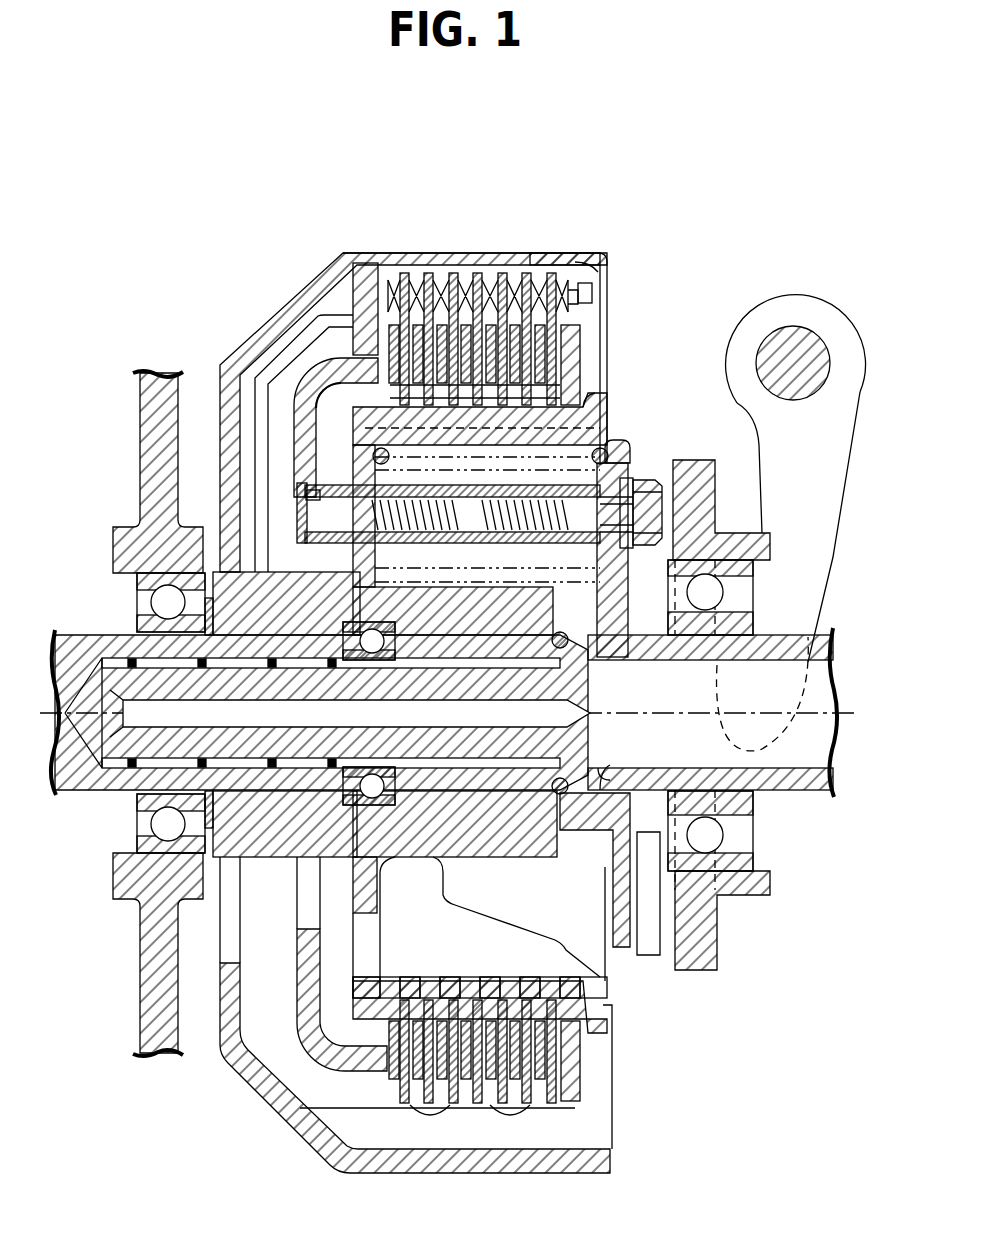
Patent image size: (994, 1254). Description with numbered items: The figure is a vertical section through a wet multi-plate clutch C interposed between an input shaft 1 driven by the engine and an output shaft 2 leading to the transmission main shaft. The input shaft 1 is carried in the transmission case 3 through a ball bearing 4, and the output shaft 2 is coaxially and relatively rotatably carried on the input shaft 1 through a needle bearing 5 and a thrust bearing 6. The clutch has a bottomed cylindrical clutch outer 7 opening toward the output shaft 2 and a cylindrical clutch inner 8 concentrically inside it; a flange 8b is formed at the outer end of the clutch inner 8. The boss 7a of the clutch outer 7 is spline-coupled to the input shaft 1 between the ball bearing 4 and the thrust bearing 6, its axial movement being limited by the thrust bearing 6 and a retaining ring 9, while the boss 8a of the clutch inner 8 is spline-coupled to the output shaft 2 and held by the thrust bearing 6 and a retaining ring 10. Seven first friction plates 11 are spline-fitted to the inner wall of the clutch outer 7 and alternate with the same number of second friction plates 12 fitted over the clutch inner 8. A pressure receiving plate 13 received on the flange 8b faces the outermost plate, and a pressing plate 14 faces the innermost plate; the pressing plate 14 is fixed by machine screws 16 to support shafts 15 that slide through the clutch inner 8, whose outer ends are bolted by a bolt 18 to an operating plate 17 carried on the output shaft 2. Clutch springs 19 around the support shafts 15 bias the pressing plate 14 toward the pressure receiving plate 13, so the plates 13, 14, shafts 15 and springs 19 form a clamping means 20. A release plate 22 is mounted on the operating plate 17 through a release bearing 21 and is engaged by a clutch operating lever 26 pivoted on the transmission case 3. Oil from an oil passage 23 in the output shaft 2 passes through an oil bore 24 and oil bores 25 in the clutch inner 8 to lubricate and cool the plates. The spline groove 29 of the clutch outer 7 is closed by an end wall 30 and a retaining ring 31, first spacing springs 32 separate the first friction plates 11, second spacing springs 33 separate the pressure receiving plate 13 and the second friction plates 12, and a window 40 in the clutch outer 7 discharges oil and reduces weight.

The input shaft 1 is at (80, 652).
The output shaft 2 is at (789, 648).
The transmission case 3 is at (156, 376).
The ball bearing 4 is at (162, 596).
The needle bearing 5 is at (291, 772).
The thrust bearing 6 is at (393, 843).
The clutch outer 7 is at (312, 284).
The boss 7a is at (290, 585).
The clutch inner 8 is at (602, 412).
The boss 8a is at (474, 618).
The flange 8b is at (598, 405).
The retaining ring 9 is at (212, 622).
The retaining ring 10 is at (556, 645).
The first friction plates 11 is at (430, 1100).
The second friction plates 12 is at (510, 1100).
The pressure receiving plate 13 is at (582, 356).
The pressing plate 14 is at (296, 422).
The support shaft 15 is at (500, 488).
The machine screw 16 is at (300, 496).
The operating plate 17 is at (620, 455).
The bolt 18 is at (646, 513).
The clutch spring 19 is at (377, 408).
The clamping means 20 is at (303, 365).
The release bearing 21 is at (712, 592).
The release plate 22 is at (736, 546).
The oil passage 23 is at (806, 770).
The oil bore 24 is at (612, 772).
The oil bores 25 is at (502, 990).
The clutch operating lever 26 is at (742, 330).
The spline groove 29 is at (577, 262).
The end wall 30 is at (372, 270).
The retaining ring 31 is at (594, 300).
The first spacing springs 32 is at (487, 280).
The second spacing springs 33 is at (457, 400).
The window 40 is at (530, 262).
The wet multi-plate clutch C is at (624, 259).